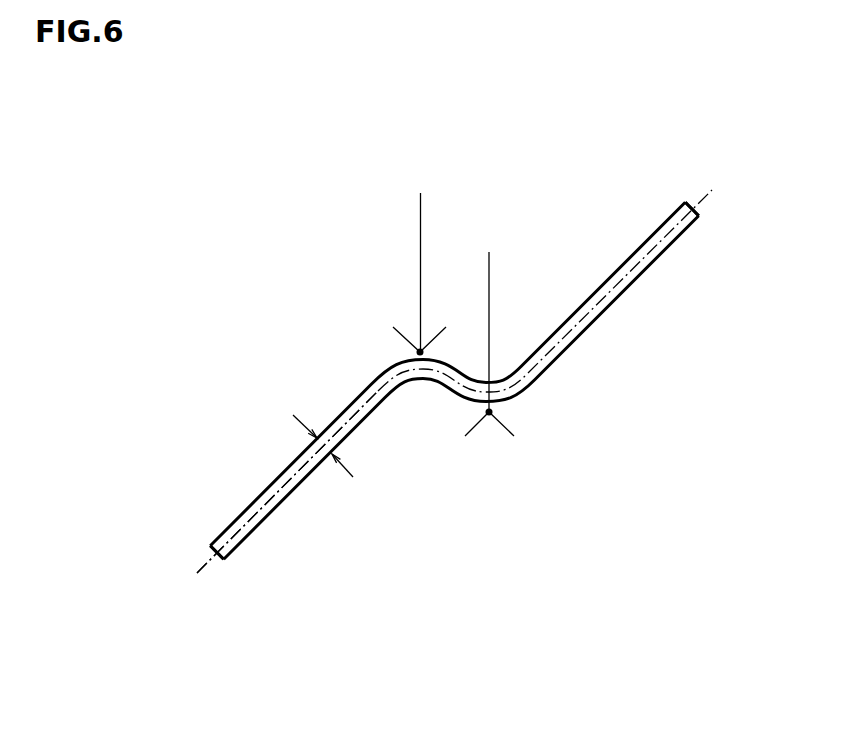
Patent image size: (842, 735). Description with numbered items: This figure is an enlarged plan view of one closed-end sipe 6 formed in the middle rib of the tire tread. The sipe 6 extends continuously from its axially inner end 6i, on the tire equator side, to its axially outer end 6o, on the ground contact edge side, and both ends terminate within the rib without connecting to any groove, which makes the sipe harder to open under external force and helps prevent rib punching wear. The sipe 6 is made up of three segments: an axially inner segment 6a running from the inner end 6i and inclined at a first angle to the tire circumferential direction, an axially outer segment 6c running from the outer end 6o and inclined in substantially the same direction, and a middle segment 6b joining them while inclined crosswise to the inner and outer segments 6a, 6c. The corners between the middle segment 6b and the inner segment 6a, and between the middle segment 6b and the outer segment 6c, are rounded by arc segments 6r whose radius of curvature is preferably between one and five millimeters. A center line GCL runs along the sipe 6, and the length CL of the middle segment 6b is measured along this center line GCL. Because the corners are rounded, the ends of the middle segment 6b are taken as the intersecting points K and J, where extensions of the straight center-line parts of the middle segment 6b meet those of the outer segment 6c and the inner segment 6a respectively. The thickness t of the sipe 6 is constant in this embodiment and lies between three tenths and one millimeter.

The sipe 6 is at (253, 343).
The axially inner segment 6a is at (627, 287).
The middle segment 6b is at (445, 387).
The axially outer segment 6c is at (257, 526).
The axially outer end 6o is at (210, 546).
The axially inner end 6i is at (698, 215).
The arc segment 6r is at (414, 342).
The intersecting point K is at (417, 352).
The intersecting point J is at (492, 412).
The length of the middle segment CL is at (488, 253).
The center line of the sipe GCL is at (278, 490).
The thickness of the sipe t is at (323, 441).